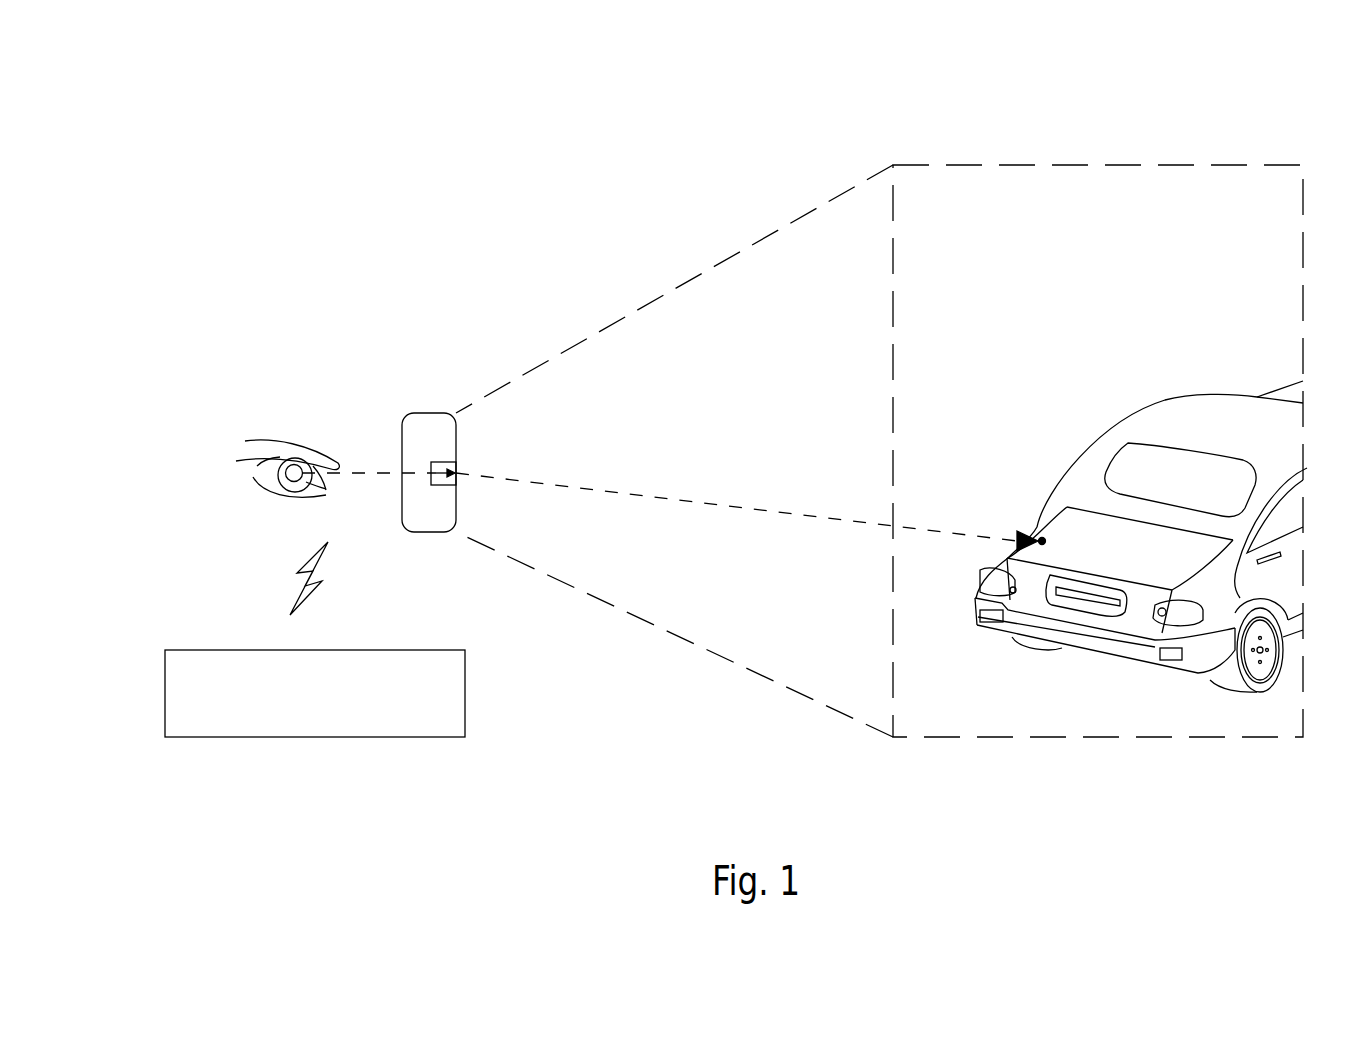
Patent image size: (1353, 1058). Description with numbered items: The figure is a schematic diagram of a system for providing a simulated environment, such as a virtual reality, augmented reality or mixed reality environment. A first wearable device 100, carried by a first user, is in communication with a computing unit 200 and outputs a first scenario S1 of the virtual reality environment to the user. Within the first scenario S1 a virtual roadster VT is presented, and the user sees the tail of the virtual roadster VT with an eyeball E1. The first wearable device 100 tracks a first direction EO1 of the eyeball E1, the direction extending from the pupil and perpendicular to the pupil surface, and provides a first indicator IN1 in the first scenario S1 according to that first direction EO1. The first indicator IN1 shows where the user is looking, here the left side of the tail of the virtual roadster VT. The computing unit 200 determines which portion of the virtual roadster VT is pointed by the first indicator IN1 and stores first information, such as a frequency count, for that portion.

The eyeball E1 is at (294, 465).
The first direction EO1 is at (381, 470).
The first wearable device 100 is at (432, 413).
The first scenario S1 is at (1075, 165).
The first indicator IN1 is at (1040, 535).
The virtual roadster VT is at (1158, 422).
The computing unit 200 is at (338, 722).